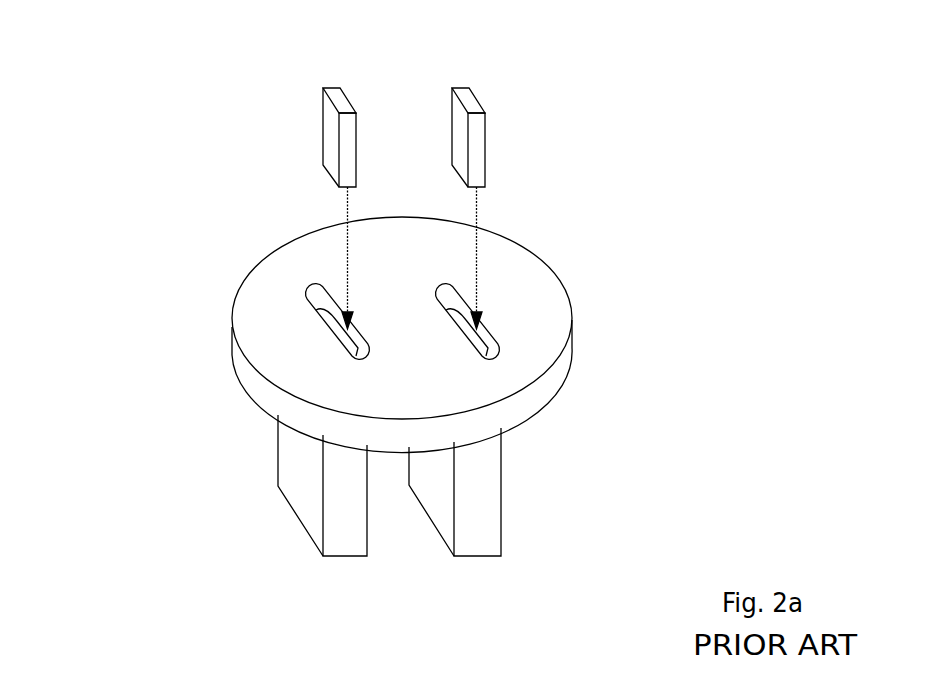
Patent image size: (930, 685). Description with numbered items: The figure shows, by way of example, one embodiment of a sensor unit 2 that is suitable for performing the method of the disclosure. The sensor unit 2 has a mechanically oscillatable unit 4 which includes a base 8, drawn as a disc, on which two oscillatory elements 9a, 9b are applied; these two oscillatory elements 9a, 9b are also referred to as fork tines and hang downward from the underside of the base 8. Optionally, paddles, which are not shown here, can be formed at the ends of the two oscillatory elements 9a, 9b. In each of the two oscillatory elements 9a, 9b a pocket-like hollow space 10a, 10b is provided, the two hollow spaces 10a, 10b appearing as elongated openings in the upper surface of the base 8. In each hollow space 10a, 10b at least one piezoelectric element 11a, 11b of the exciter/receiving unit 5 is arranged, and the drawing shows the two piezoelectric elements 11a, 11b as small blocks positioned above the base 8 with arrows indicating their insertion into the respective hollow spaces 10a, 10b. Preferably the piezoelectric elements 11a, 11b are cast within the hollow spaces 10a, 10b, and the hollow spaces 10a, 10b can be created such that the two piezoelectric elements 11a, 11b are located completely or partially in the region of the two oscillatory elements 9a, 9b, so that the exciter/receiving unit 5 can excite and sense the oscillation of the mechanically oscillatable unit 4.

The sensor unit 2 is at (48, 78).
The mechanically oscillatable unit 4 is at (180, 461).
The exciter/receiving unit 5 is at (283, 84).
The base 8 is at (545, 327).
The oscillatory element 9a is at (341, 545).
The oscillatory element 9b is at (480, 545).
The hollow space 10a is at (320, 297).
The hollow space 10b is at (448, 297).
The piezoelectric element 11a is at (332, 130).
The piezoelectric element 11b is at (487, 130).